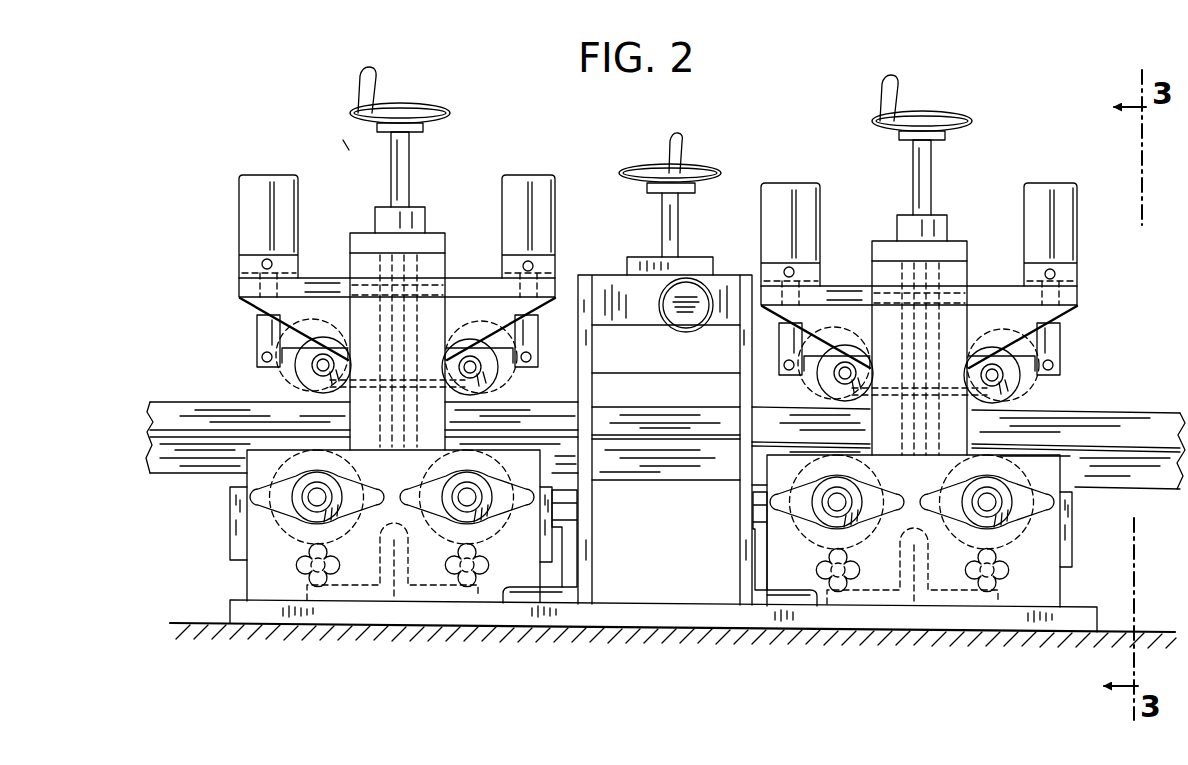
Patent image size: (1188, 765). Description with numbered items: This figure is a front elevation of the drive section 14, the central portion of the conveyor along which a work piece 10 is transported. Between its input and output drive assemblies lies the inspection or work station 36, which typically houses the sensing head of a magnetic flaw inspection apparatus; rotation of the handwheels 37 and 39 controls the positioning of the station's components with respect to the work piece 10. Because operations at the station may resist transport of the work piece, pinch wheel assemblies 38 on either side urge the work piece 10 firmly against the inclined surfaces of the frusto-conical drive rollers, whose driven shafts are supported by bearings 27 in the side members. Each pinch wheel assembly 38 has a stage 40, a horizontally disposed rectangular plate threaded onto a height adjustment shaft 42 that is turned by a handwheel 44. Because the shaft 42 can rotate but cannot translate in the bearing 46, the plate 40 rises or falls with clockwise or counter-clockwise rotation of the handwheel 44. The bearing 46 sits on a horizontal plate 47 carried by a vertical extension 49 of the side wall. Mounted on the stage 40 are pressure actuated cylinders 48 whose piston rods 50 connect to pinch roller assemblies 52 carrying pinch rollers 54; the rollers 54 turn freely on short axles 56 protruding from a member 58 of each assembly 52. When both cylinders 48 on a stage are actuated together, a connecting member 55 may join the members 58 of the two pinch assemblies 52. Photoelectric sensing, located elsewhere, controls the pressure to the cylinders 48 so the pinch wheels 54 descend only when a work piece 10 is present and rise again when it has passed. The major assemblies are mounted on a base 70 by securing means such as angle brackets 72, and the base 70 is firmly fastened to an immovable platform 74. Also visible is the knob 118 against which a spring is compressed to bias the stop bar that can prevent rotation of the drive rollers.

The work piece 10 is at (149, 404).
The drive section 14 is at (318, 159).
The bearings 27 is at (437, 491).
The inspection or work station 36 is at (606, 273).
The handwheel 37 is at (707, 169).
The pinch wheel assembly 38 is at (238, 290).
The handwheel 39 is at (680, 318).
The stage 40 is at (322, 278).
The height adjustment shaft 42 is at (410, 170).
The handwheel 44 is at (418, 110).
The bearing 46 is at (426, 222).
The horizontal plate 47 is at (447, 245).
The pressure actuated cylinders 48 is at (252, 207).
The vertical extension 49 is at (447, 268).
The piston rods 50 is at (257, 307).
The pinch roller assemblies 52 is at (255, 356).
The pinch rollers 54 is at (311, 392).
The connecting member 55 is at (458, 345).
The short axles 56 is at (318, 371).
The member 58 is at (290, 340).
The base 70 is at (645, 603).
The angle brackets 72 is at (397, 575).
The immovable platform 74 is at (464, 629).
The knob 118 is at (297, 562).